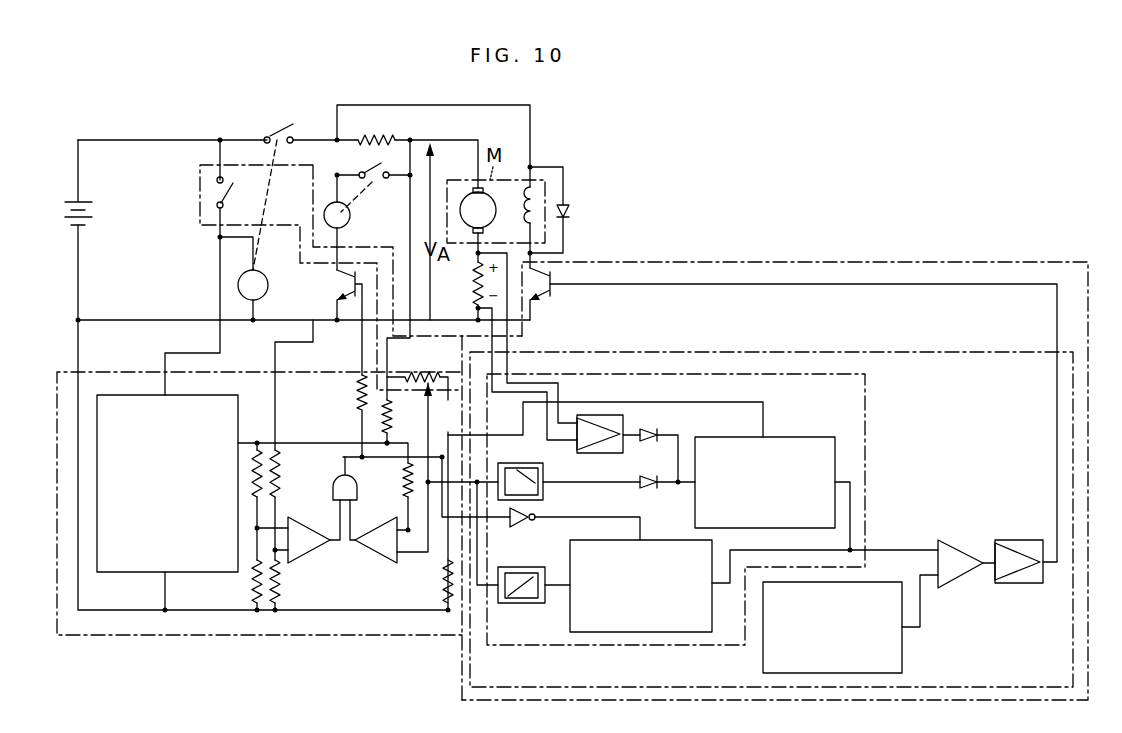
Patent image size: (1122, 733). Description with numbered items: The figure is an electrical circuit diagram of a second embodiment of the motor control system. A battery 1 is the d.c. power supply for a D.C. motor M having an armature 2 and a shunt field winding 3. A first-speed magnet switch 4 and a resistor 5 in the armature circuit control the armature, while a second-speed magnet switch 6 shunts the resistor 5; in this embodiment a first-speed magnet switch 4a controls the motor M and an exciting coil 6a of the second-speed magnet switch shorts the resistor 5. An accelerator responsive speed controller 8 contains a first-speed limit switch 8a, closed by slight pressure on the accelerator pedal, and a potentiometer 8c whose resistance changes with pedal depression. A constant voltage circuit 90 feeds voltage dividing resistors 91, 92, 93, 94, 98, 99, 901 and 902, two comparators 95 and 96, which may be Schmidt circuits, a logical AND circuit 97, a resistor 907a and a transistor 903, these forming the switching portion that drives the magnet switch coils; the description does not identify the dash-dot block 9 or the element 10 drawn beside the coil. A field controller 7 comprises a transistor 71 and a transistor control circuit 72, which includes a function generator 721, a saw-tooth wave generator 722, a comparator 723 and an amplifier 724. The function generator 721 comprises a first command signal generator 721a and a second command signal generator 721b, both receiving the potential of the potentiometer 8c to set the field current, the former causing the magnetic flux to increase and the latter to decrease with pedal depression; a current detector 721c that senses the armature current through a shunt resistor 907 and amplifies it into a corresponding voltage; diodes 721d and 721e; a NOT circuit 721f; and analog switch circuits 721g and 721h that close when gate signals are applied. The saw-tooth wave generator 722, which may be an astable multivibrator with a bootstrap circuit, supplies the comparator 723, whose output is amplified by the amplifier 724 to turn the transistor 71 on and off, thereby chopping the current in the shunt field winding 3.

The battery 1 is at (65, 207).
The armature 2 is at (492, 216).
The shunt field winding 3 is at (524, 210).
The first-speed magnet switch 4 is at (270, 132).
The first-speed magnet switch 4a is at (257, 278).
The resistor 5 is at (375, 136).
The second-speed magnet switch 6 is at (372, 181).
The exciting coil 6a is at (347, 221).
The field controller 7 is at (848, 262).
The accelerator responsive speed controller 8 is at (198, 192).
The first-speed limit switch 8a is at (238, 178).
The potentiometer 8c is at (437, 366).
The reference voltage circuit 9 is at (205, 637).
The diode 10 is at (570, 208).
The transistor 71 is at (543, 293).
The transistor control circuit 72 is at (836, 352).
The constant voltage circuit 90 is at (130, 572).
The voltage dividing resistor 91 is at (256, 452).
The voltage dividing resistor 92 is at (252, 581).
The voltage dividing resistor 93 is at (281, 481).
The voltage dividing resistor 94 is at (281, 583).
The comparator 95 is at (320, 533).
The comparator 96 is at (380, 520).
The logical AND circuit 97 is at (333, 487).
The voltage dividing resistor 98 is at (404, 480).
The voltage dividing resistor 99 is at (443, 576).
The voltage dividing resistor 901 is at (450, 410).
The voltage dividing resistor 902 is at (385, 441).
The transistor 903 is at (333, 290).
The shunt resistor 907 is at (472, 280).
The resistor 907a is at (357, 396).
The function generator 721 is at (870, 390).
The first command signal generator 721a is at (530, 603).
The second command signal generator 721b is at (540, 463).
The current detector 721c is at (604, 454).
The diode 721d is at (644, 429).
The diode 721e is at (641, 490).
The NOT circuit 721f is at (528, 531).
The analog switch circuit 721g is at (678, 540).
The analog switch circuit 721h is at (772, 437).
The saw-tooth wave generator 722 is at (902, 657).
The comparator 723 is at (960, 544).
The amplifier 724 is at (1035, 540).